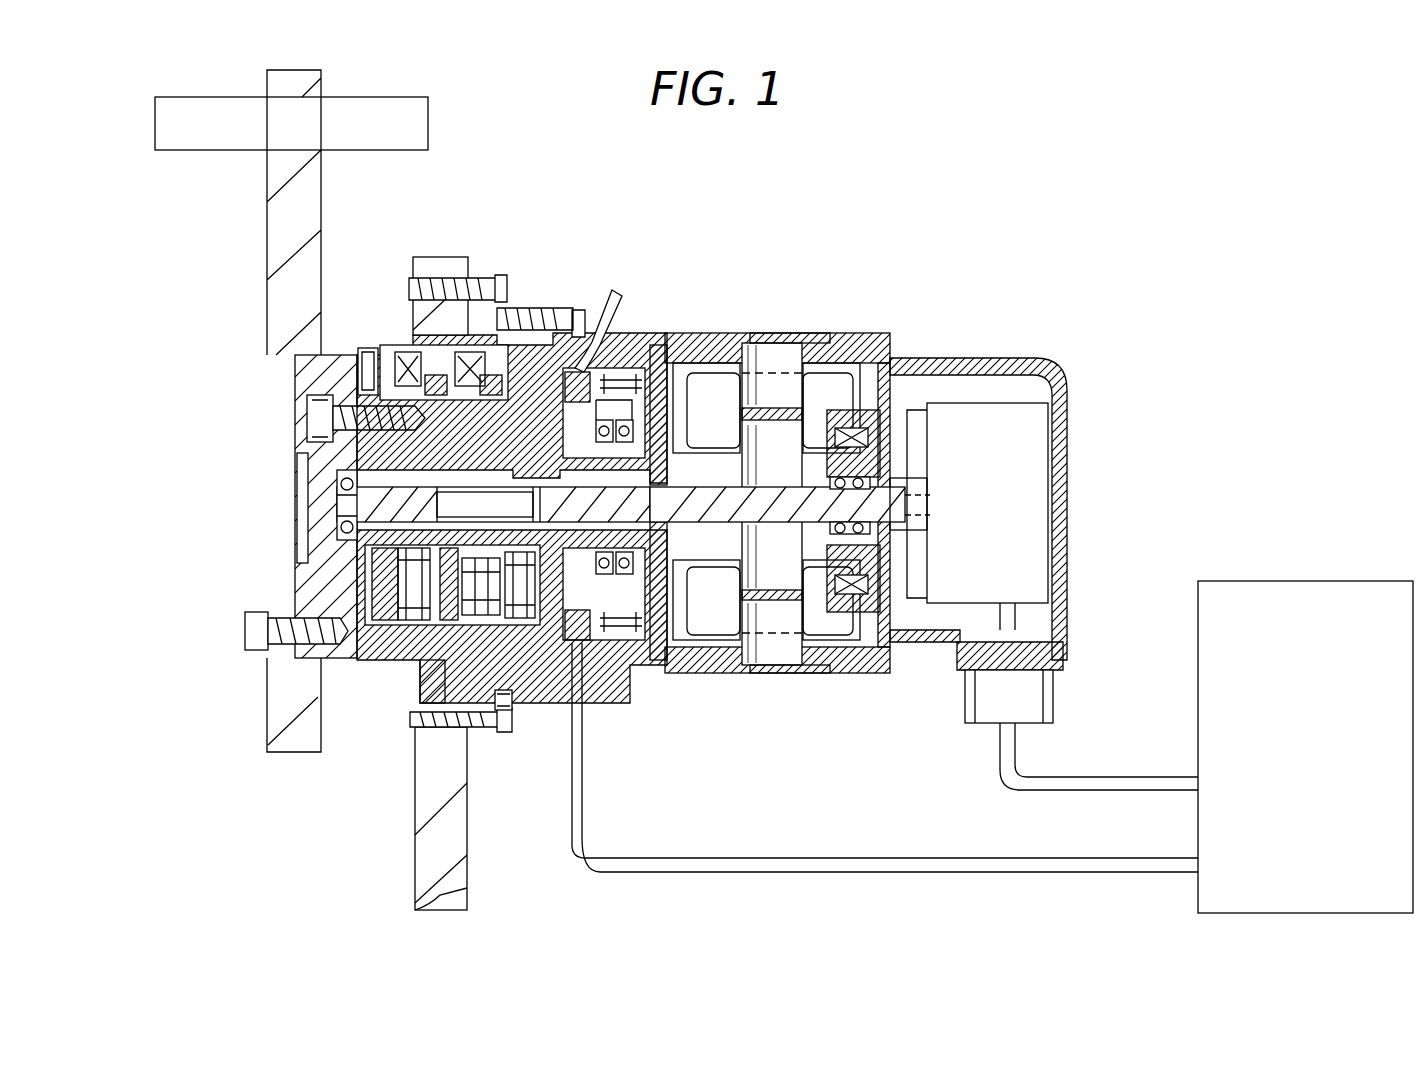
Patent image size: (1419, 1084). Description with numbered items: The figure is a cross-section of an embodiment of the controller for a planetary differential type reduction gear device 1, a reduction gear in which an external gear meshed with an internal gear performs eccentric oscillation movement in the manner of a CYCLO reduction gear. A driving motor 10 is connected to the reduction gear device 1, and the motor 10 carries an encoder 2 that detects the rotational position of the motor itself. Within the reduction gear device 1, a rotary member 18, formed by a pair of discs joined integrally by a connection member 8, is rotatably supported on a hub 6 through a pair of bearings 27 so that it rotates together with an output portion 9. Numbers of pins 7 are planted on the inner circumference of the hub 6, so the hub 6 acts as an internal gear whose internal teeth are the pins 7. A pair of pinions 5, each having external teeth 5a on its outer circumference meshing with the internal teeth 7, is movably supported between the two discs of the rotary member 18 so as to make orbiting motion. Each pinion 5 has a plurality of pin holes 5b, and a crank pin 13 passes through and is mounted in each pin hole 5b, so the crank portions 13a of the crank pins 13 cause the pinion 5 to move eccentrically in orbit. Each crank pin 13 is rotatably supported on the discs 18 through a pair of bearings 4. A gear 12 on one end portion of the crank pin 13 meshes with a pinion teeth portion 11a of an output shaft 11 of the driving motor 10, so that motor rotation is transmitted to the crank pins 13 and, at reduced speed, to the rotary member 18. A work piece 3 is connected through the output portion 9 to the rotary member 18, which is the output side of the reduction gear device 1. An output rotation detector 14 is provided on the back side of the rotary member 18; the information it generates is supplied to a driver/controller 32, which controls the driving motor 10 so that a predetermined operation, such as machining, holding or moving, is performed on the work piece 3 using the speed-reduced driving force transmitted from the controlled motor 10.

The planetary differential type reduction gear device 1 is at (538, 297).
The encoder 2 is at (1035, 447).
The work piece 3 is at (273, 571).
The bearings 4 is at (412, 630).
The pinions 5 is at (462, 704).
The external teeth 5a is at (452, 622).
The pin holes 5b is at (438, 704).
The hub 6 is at (522, 310).
The pins 7 is at (462, 347).
The connection member 8 is at (312, 412).
The output portion 9 is at (293, 358).
The driving motor 10 is at (790, 320).
The output shaft 11 is at (345, 512).
The pinion teeth portion 11a is at (347, 470).
The gear 12 is at (375, 624).
The crank pin 13 is at (312, 640).
The crank portions 13a is at (503, 712).
The output rotation detector 14 is at (625, 322).
The rotary member 18 is at (362, 360).
The bearings 27 is at (408, 360).
The driver/controller 32 is at (1312, 580).